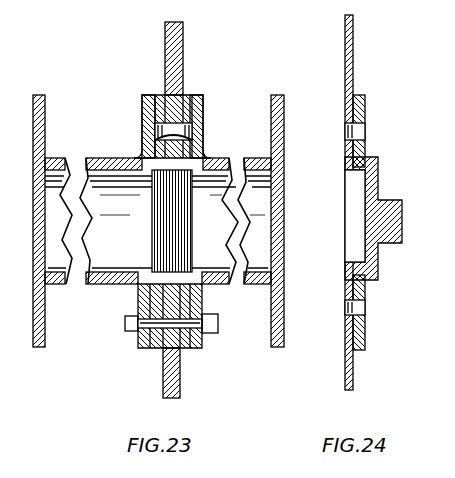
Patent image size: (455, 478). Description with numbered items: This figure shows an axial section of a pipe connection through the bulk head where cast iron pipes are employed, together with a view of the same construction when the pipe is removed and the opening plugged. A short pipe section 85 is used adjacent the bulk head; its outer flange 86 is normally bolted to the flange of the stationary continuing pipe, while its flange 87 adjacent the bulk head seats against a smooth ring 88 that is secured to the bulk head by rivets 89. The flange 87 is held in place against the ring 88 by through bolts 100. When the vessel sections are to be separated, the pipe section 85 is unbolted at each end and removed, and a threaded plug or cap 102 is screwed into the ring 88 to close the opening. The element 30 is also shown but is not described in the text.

In FIG. 23, the threaded rod 30 is at (183, 46).
In FIG. 24, the threaded rod 30 is at (355, 50).
In FIG. 23, the short pipe section 85 is at (118, 158).
In FIG. 23, the flange 86 is at (45, 106).
In FIG. 23, the flange 87 is at (142, 100).
In FIG. 23, the smooth ring 88 is at (185, 96).
In FIG. 24, the smooth ring 88 is at (366, 100).
In FIG. 23, the rivet 89 is at (192, 131).
In FIG. 24, the rivet 89 is at (367, 132).
In FIG. 23, the through bolt 100 is at (137, 340).
In FIG. 24, the threaded plug or cap 102 is at (380, 195).